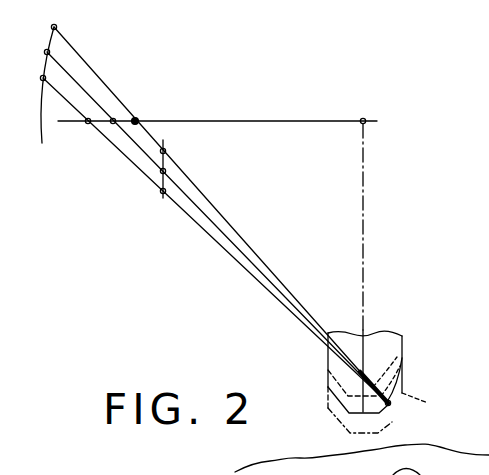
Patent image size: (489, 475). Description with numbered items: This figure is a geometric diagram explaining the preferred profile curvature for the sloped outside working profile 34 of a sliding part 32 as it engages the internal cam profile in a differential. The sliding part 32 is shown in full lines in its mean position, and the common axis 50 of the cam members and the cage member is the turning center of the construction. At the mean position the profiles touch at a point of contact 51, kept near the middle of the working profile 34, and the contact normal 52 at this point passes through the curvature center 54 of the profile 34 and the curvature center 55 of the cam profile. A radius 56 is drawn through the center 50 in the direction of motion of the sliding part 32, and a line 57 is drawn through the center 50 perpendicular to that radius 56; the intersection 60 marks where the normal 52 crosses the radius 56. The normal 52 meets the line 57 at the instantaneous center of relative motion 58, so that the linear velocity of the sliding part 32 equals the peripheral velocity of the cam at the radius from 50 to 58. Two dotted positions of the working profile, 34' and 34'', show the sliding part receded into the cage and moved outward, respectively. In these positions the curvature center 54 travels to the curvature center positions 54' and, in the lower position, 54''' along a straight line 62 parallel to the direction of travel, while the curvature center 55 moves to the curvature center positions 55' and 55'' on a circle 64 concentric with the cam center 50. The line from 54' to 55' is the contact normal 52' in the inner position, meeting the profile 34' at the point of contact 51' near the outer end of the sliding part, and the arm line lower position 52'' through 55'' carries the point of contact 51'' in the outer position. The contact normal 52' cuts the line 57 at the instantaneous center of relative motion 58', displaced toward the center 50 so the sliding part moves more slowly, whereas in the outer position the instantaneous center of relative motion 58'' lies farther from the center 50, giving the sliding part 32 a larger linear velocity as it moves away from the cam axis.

The sliding part 32 is at (355, 350).
The sloped outside working profile 34 is at (373, 402).
The dotted position of working profile 34' is at (332, 382).
The dotted position of working profile 34'' is at (342, 417).
The common axis 50 is at (378, 110).
The point of contact 51 is at (406, 416).
The point of contact 51' is at (417, 371).
The point of contact 51'' is at (423, 404).
The contact normal 52 is at (217, 227).
The contact normal 52' is at (221, 215).
The arm line lower position 52'' is at (215, 240).
The curvature center 54 is at (188, 171).
The curvature center position 54' is at (183, 145).
The intersection point lower 54''' is at (143, 203).
The curvature center 55 is at (36, 39).
The curvature center position 55' is at (79, 18).
The curvature center position 55'' is at (86, 70).
The radius 56 is at (372, 216).
The line 57 is at (232, 121).
The instantaneous center of relative motion 58 is at (132, 104).
The instantaneous center of relative motion 58' is at (161, 108).
The instantaneous center of relative motion 58'' is at (102, 143).
The intersection 60 is at (367, 378).
The straight line 62 is at (161, 192).
The circle 64 is at (46, 138).